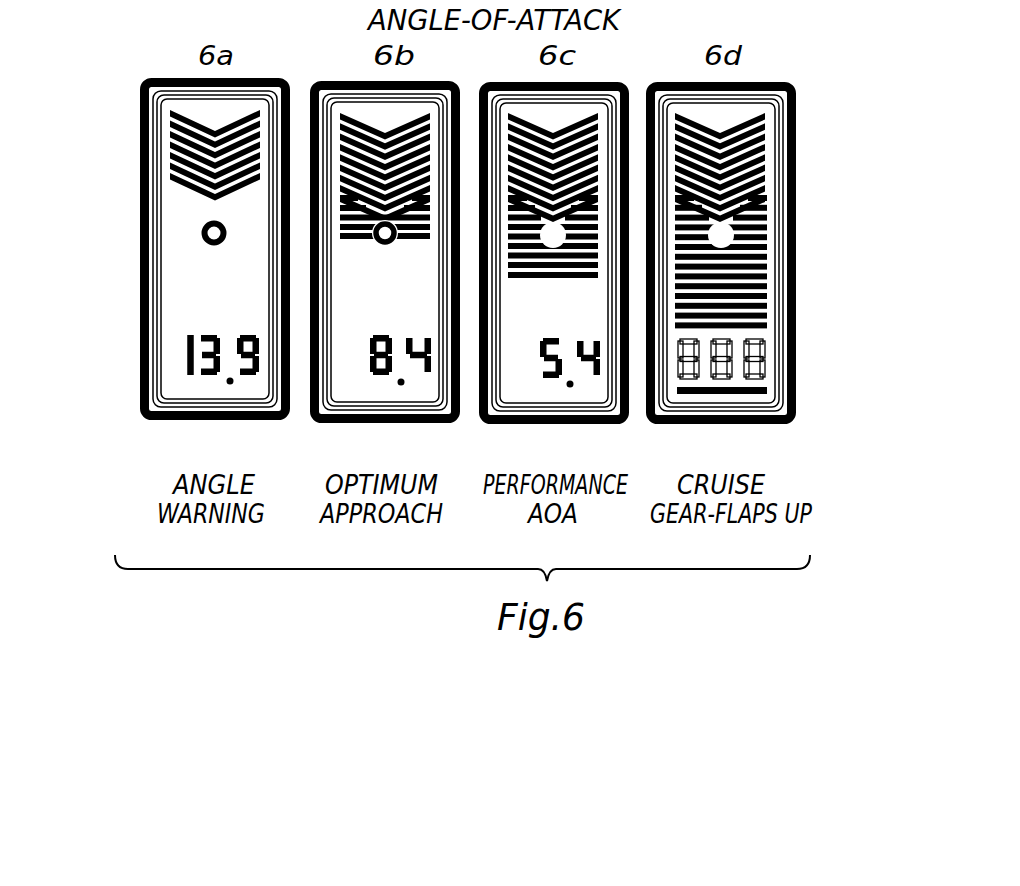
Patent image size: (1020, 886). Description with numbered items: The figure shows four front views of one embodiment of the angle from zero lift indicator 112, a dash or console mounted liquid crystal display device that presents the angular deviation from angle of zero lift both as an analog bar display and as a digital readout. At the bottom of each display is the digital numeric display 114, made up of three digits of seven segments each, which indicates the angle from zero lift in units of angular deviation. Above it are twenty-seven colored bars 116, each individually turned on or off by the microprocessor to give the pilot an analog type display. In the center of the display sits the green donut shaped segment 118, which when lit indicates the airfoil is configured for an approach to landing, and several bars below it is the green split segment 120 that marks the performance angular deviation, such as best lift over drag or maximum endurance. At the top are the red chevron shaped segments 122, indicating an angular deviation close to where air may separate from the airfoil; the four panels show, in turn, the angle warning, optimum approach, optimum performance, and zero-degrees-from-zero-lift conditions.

The angle from zero lift indicator 112 is at (161, 274).
The digital numeric display 114 is at (127, 370).
The colored bars 116 is at (777, 268).
The donut shaped segment 118 is at (192, 232).
The split segment 120 is at (831, 287).
The chevron shaped segments 122 is at (125, 125).